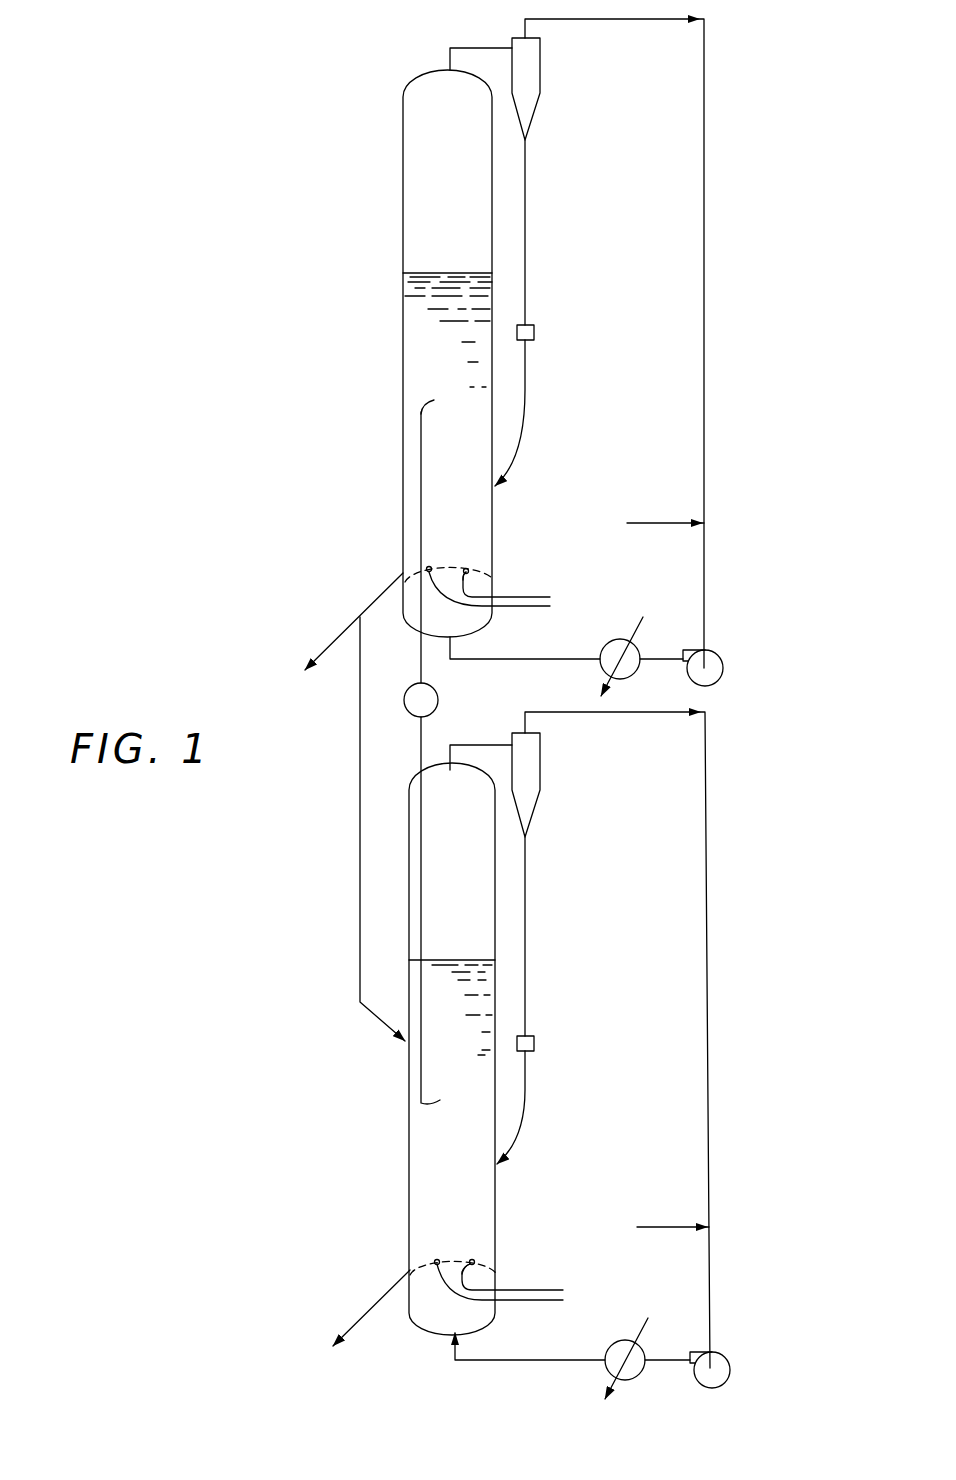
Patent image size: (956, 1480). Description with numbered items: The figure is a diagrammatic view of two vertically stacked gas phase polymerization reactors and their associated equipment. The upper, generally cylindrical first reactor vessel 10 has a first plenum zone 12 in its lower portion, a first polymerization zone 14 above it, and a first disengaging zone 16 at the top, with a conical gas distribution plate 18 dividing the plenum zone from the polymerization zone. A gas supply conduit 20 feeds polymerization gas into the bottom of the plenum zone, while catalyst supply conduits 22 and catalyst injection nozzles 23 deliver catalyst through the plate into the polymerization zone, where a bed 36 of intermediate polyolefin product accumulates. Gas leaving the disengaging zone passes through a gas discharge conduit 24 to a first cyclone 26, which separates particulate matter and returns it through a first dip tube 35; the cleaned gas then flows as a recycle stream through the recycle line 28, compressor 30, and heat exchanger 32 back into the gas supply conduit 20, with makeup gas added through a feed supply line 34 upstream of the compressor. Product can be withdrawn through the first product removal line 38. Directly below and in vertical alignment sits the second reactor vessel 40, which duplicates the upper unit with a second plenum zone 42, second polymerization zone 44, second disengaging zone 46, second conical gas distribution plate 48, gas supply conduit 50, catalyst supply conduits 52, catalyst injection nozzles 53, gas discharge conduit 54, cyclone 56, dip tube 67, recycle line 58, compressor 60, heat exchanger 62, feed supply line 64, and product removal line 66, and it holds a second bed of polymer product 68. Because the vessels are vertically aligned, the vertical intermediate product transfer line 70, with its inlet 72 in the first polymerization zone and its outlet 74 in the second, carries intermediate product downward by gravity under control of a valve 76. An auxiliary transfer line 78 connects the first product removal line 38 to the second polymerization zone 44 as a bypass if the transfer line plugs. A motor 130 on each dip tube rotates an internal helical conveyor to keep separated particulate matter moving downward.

The first reactor vessel 10 is at (368, 321).
The first plenum zone 12 is at (470, 620).
The first polymerization zone 14 is at (464, 465).
The first disengaging zone 16 is at (464, 198).
The conical gas distribution plate 18 is at (484, 577).
The gas supply conduit 20 is at (548, 659).
The catalyst supply conduits 22 is at (530, 597).
The catalyst injection nozzles 23 is at (466, 567).
The gas discharge conduit 24 is at (478, 47).
The first cyclone 26 is at (541, 72).
The recycle line 28 is at (705, 332).
The compressor 30 is at (722, 656).
The heat exchanger 32 is at (641, 647).
The feed supply line 34 is at (657, 523).
The first dip tube 35 is at (527, 247).
The bed of intermediate polyolefin product 36 is at (417, 357).
The first product removal line 38 is at (333, 648).
The second reactor vessel 40 is at (372, 1141).
The second plenum zone 42 is at (475, 1328).
The second polymerization zone 44 is at (465, 1158).
The second disengaging zone 46 is at (465, 890).
The second conical gas distribution plate 48 is at (487, 1267).
The gas supply conduit 50 is at (550, 1360).
The catalyst supply conduits 52 is at (537, 1290).
The catalyst injection nozzles 53 is at (472, 1257).
The gas discharge conduit 54 is at (492, 745).
The cyclone 56 is at (541, 765).
The recycle line 58 is at (706, 975).
The compressor 60 is at (727, 1357).
The heat exchanger 62 is at (646, 1347).
The feed supply line 64 is at (657, 1227).
The product removal line 66 is at (368, 1312).
The dip tube 67 is at (527, 918).
The second bed of polymer product 68 is at (412, 1183).
The intermediate product transfer line 70 is at (423, 500).
The inlet 72 is at (444, 403).
The outlet 74 is at (447, 914).
The valve 76 is at (438, 700).
The auxiliary transfer line 78 is at (358, 822).
The motor 130 is at (535, 332).